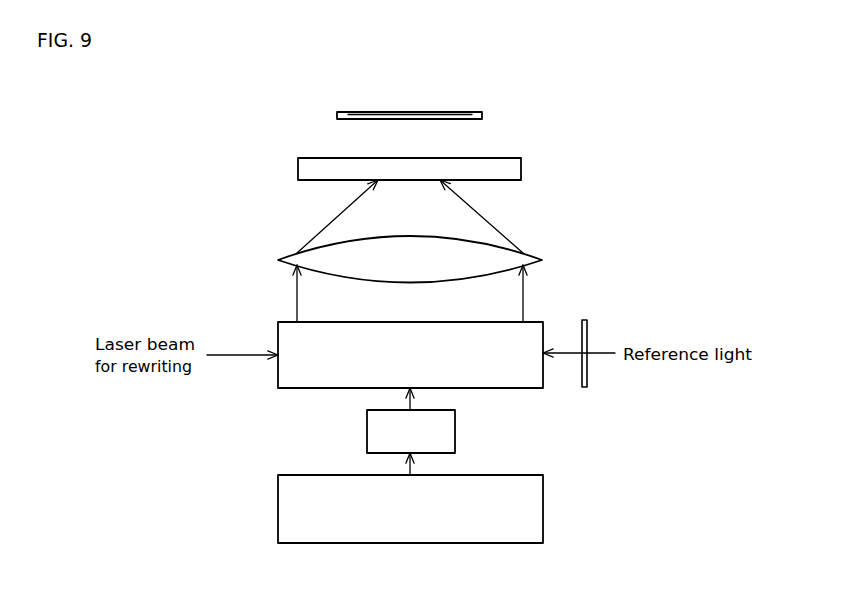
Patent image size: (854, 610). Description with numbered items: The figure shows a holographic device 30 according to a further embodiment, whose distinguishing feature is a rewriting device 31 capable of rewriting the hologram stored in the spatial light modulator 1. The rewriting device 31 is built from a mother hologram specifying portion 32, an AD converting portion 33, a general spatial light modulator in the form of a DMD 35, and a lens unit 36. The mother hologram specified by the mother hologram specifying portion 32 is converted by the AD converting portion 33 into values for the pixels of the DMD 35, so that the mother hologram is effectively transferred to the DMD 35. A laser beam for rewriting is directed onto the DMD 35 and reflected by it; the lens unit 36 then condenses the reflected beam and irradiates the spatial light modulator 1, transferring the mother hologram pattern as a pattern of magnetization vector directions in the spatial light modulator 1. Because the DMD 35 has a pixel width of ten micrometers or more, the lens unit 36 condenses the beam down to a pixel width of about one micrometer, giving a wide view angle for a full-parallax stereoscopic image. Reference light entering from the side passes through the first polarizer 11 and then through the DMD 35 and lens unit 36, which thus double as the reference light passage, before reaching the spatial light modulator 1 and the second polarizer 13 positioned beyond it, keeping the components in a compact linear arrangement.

The spatial light modulator 1 is at (521, 165).
The first polarizer 11 is at (587, 372).
The second polarizer 13 is at (470, 112).
The holographic device 30 is at (640, 150).
The rewriting device 31 is at (232, 442).
The mother hologram specifying portion 32 is at (543, 505).
The AD converting portion 33 is at (455, 433).
The DMD 35 is at (505, 388).
The lens unit 36 is at (537, 257).